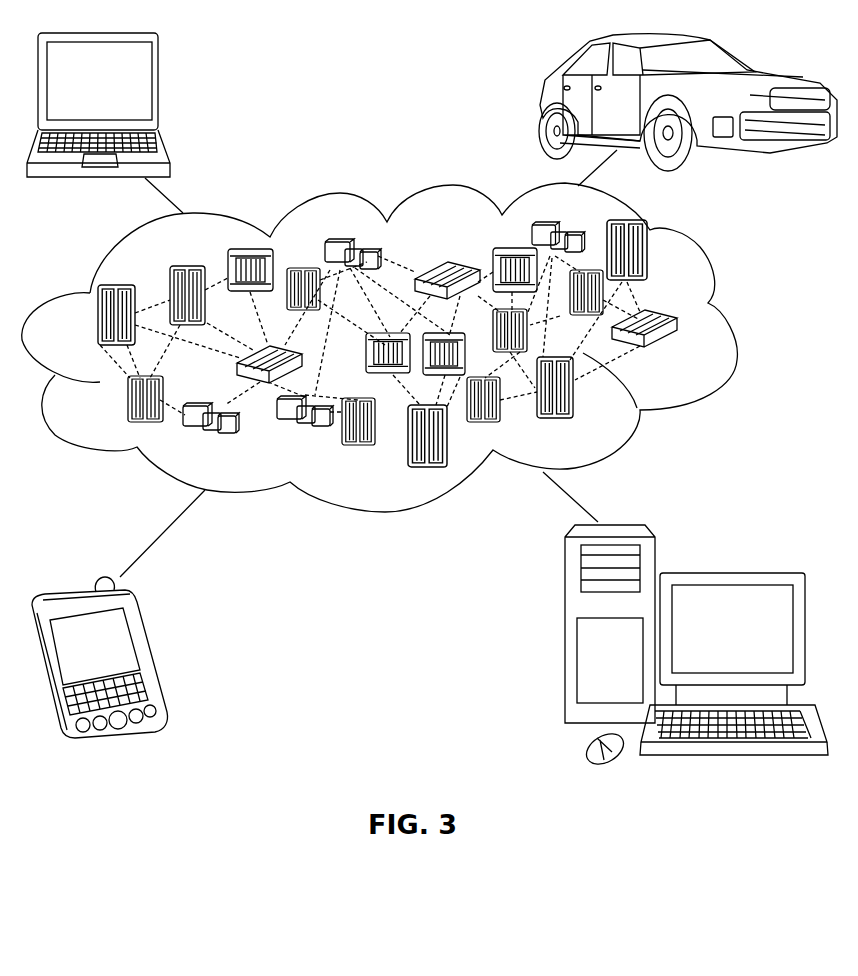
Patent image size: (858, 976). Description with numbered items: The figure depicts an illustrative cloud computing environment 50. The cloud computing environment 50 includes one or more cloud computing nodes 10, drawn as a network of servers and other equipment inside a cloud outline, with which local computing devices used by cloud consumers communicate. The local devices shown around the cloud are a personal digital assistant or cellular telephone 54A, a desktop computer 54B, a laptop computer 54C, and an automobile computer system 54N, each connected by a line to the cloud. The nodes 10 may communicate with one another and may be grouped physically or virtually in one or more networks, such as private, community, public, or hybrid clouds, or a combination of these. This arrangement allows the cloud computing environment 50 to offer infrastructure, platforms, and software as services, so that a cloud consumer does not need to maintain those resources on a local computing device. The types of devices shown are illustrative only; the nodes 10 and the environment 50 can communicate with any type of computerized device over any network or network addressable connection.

The cloud computing node 10 is at (682, 353).
The cloud computing environment 50 is at (730, 325).
The personal digital assistant or cellular telephone 54A is at (152, 657).
The desktop computer 54B is at (730, 572).
The laptop computer 54C is at (158, 87).
The automobile computer system 54N is at (542, 100).